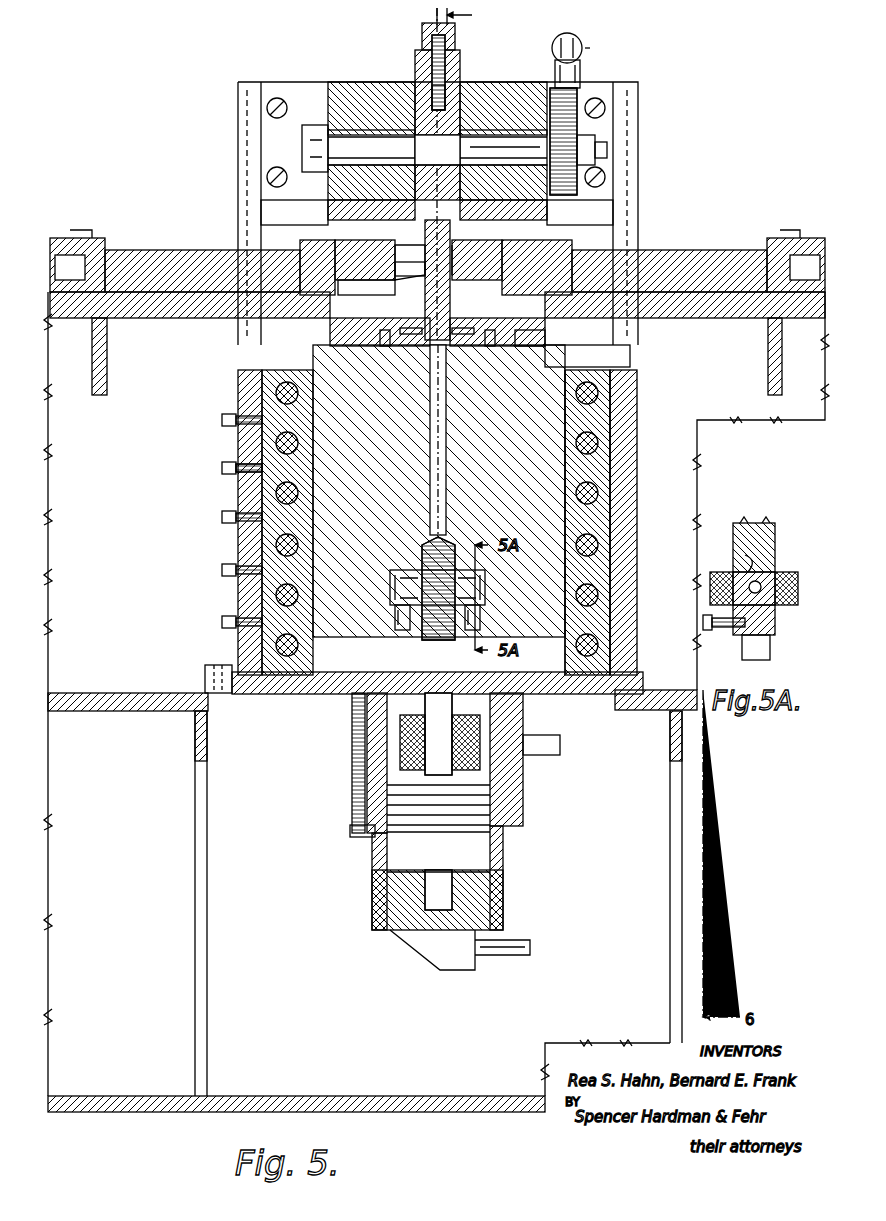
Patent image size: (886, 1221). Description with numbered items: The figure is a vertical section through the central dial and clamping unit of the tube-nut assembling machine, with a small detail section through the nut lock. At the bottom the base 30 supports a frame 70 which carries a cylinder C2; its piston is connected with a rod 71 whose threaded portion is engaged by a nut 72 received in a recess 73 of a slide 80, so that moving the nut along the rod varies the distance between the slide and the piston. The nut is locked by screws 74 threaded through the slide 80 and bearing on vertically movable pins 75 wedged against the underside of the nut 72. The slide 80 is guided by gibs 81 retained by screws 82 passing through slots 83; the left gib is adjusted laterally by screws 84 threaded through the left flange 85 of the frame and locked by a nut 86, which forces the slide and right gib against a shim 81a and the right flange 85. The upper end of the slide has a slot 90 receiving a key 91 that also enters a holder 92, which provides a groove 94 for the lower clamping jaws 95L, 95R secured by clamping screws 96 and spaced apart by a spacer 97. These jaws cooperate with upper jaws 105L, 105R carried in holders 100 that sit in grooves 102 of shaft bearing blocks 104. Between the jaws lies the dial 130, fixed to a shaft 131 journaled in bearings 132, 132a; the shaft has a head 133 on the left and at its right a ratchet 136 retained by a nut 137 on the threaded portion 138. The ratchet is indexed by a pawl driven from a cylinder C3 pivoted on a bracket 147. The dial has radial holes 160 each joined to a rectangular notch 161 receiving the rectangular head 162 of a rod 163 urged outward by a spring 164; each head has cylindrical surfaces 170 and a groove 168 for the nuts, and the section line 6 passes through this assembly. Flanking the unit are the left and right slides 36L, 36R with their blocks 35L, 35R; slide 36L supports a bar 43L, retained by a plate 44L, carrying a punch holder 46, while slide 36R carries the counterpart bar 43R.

In FIG. 5, the groove 168 is at (437, 20).
In FIG. 5, the rectangular head 162 is at (424, 40).
In FIG. 5, the section line 6 is at (467, 17).
In FIG. 5, the dial 130 is at (420, 68).
In FIG. 5, the rod 163 is at (446, 78).
In FIG. 5, the spring 164 is at (434, 105).
In FIG. 5, the shaft bearing blocks 104 is at (358, 95).
In FIG. 5, the bearing 132 is at (340, 130).
In FIG. 5, the shaft 131 is at (496, 142).
In FIG. 5, the head 133 is at (302, 136).
In FIG. 5, the radially extending hole 160 is at (432, 196).
In FIG. 5, the bearing 132a is at (520, 130).
In FIG. 5, the bracket 147 is at (582, 45).
In FIG. 5, the cylinder C3 is at (585, 50).
In FIG. 5, the ratchet 136 is at (575, 105).
In FIG. 5, the nut 137 is at (598, 142).
In FIG. 5, the threaded portion 138 is at (607, 150).
In FIG. 5, the holder 100 is at (345, 208).
In FIG. 5, the groove 102 is at (392, 192).
In FIG. 5, the left upper clamping jaw 105L is at (371, 218).
In FIG. 5, the right upper clamping jaw 105R is at (478, 226).
In FIG. 5, the rectangular notch 161 is at (421, 280).
In FIG. 5, the left block 35L is at (64, 238).
In FIG. 5, the left slide 36L is at (160, 250).
In FIG. 5, the plate 44L is at (312, 245).
In FIG. 5, the right block 35R is at (795, 238).
In FIG. 5, the right slide 36R is at (704, 258).
In FIG. 5, the right bar 43R is at (552, 250).
In FIG. 5, the cylindrical surfaces 170 is at (405, 278).
In FIG. 5, the left bar 43L is at (320, 298).
In FIG. 5, the holder 92 is at (330, 334).
In FIG. 5, the key 91 is at (548, 338).
In FIG. 5, the slot 90 is at (566, 350).
In FIG. 5, the clamping screws 96 is at (382, 335).
In FIG. 5, the left clamping jaw 95L is at (412, 336).
In FIG. 5, the right clamping jaw 95R is at (460, 338).
In FIG. 5, the holder 46 is at (494, 338).
In FIG. 5, the groove 94 is at (526, 340).
In FIG. 5, the slide 80 is at (540, 516).
In FIG. 5A, the slide 80 is at (776, 545).
In FIG. 5, the spacer 97 is at (432, 402).
In FIG. 5, the flange 85 is at (238, 388).
In FIG. 5, the gib 81 is at (282, 526).
In FIG. 5, the screws 82 is at (284, 597).
In FIG. 5, the slots 83 is at (612, 404).
In FIG. 5, the shim 81a is at (602, 452).
In FIG. 5, the screws 84 is at (236, 424).
In FIG. 5, the nut 86 is at (236, 470).
In FIG. 5, the nut 72 is at (480, 597).
In FIG. 5A, the nut 72 is at (786, 574).
In FIG. 5, the recess 73 is at (480, 578).
In FIG. 5A, the recess 73 is at (745, 556).
In FIG. 5, the pins 75 is at (400, 628).
In FIG. 5A, the pins 75 is at (776, 614).
In FIG. 5, the frame 70 is at (222, 656).
In FIG. 5, the base 30 is at (162, 1112).
In FIG. 5, the cylinder C2 is at (520, 802).
In FIG. 5, the rod 71 is at (452, 764).
In FIG. 5A, the screws 74 is at (728, 630).